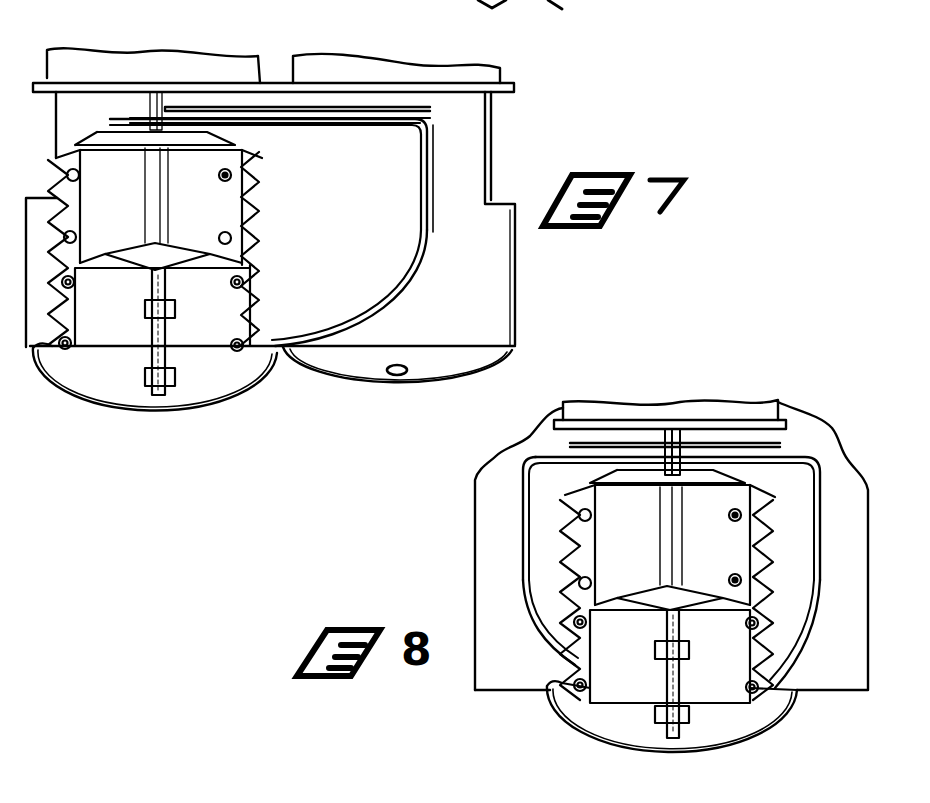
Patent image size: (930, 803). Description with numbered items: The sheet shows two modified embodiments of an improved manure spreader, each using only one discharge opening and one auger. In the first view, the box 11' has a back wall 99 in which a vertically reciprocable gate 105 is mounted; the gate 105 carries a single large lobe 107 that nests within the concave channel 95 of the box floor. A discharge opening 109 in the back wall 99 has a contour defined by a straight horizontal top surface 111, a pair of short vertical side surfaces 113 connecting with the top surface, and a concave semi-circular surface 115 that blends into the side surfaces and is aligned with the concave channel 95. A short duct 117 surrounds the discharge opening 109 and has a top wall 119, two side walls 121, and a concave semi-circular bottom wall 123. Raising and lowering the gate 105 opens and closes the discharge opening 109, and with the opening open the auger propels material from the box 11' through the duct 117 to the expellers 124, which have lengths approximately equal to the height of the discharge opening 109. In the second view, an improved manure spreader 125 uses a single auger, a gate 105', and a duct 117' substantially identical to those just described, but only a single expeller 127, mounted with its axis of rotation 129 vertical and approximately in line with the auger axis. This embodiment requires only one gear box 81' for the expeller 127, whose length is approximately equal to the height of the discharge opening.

In FIG. 7, the box 11' is at (306, 81).
In FIG. 7, the top wall 119 is at (268, 116).
In FIG. 7, the straight horizontal top surface 111 is at (307, 124).
In FIG. 7, the short vertical side surfaces 113 is at (419, 142).
In FIG. 7, the side walls 121 is at (429, 172).
In FIG. 7, the discharge opening 109 is at (419, 197).
In FIG. 7, the duct 117 is at (378, 288).
In FIG. 7, the concave semi-circular surface 115 is at (373, 304).
In FIG. 7, the back wall 99 is at (462, 137).
In FIG. 7, the gate 105 is at (203, 246).
In FIG. 7, the channel 95 is at (316, 330).
In FIG. 7, the lobe 107 is at (304, 333).
In FIG. 7, the expellers 124 is at (73, 404).
In FIG. 7, the concave semi-circular bottom wall 123 is at (340, 340).
In FIG. 8, the gear box 81' is at (686, 401).
In FIG. 8, the improved manure spreader 125 is at (474, 553).
In FIG. 8, the gate 105' is at (611, 518).
In FIG. 8, the duct 117' is at (613, 633).
In FIG. 8, the axis of rotation 129 is at (668, 505).
In FIG. 8, the expeller 127 is at (581, 742).